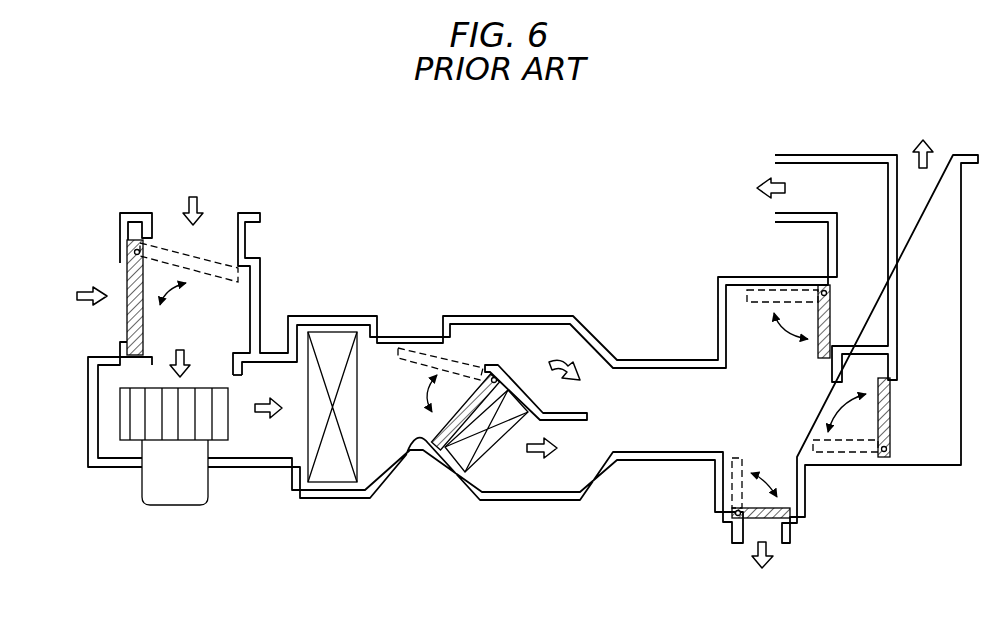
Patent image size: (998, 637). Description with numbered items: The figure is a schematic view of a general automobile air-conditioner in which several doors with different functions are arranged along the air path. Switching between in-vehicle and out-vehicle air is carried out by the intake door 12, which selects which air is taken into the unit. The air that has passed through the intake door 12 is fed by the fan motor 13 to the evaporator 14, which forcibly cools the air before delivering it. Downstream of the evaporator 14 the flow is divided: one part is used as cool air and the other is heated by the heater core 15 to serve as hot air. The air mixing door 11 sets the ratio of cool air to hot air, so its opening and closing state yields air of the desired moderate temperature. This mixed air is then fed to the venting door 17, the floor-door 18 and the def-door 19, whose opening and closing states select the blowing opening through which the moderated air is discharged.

The air mixing door 11 is at (420, 447).
The intake door 12 is at (127, 272).
The fan motor 13 is at (152, 480).
The evaporator 14 is at (330, 473).
The heater core 15 is at (462, 457).
The venting door 17 is at (818, 313).
The floor-door 18 is at (778, 506).
The def-door 19 is at (890, 432).